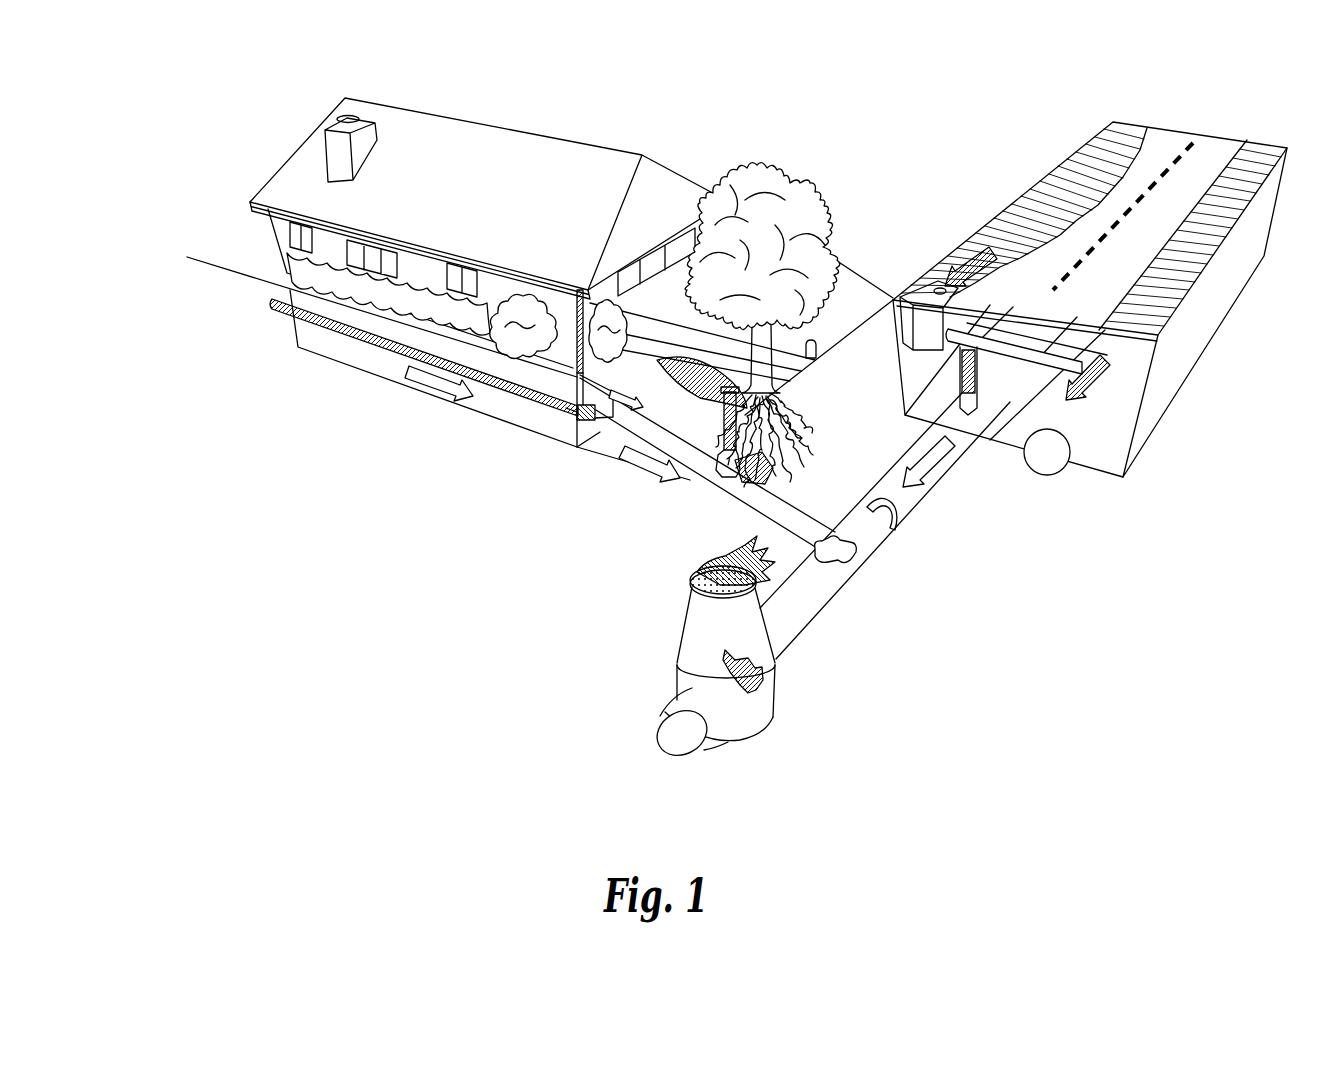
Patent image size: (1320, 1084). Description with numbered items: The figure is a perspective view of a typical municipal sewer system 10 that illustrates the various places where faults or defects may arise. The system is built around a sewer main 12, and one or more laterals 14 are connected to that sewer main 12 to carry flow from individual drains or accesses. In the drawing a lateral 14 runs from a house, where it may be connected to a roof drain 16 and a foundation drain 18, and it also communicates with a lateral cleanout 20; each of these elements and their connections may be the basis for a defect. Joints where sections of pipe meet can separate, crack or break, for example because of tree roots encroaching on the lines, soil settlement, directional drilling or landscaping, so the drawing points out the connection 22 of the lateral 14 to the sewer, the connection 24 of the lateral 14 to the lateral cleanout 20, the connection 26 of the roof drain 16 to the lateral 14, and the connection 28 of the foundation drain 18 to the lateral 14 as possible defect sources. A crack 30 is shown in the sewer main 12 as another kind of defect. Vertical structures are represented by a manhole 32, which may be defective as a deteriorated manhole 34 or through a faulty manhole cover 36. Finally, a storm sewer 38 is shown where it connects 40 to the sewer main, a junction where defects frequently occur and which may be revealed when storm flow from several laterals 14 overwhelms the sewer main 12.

The municipal sewer system 10 is at (209, 177).
The sewer main 12 is at (797, 602).
The lateral 14 is at (290, 330).
The roof drain 16 is at (417, 392).
The foundation drain 18 is at (570, 421).
The lateral cleanout 20 is at (795, 438).
The connection of the lateral to the sewer 22 is at (837, 563).
The connection of the lateral to the lateral cleanout 24 is at (722, 478).
The connection of the roof drain to the lateral 26 is at (577, 372).
The connection of the foundation drain to the lateral 28 is at (567, 413).
The crack 30 is at (887, 520).
The manhole 32 is at (708, 652).
The deteriorated manhole 34 is at (763, 690).
The manhole cover 36 is at (693, 595).
The storm sewer 38 is at (1162, 373).
The connection of the storm sewer to the sewer main 40 is at (968, 415).